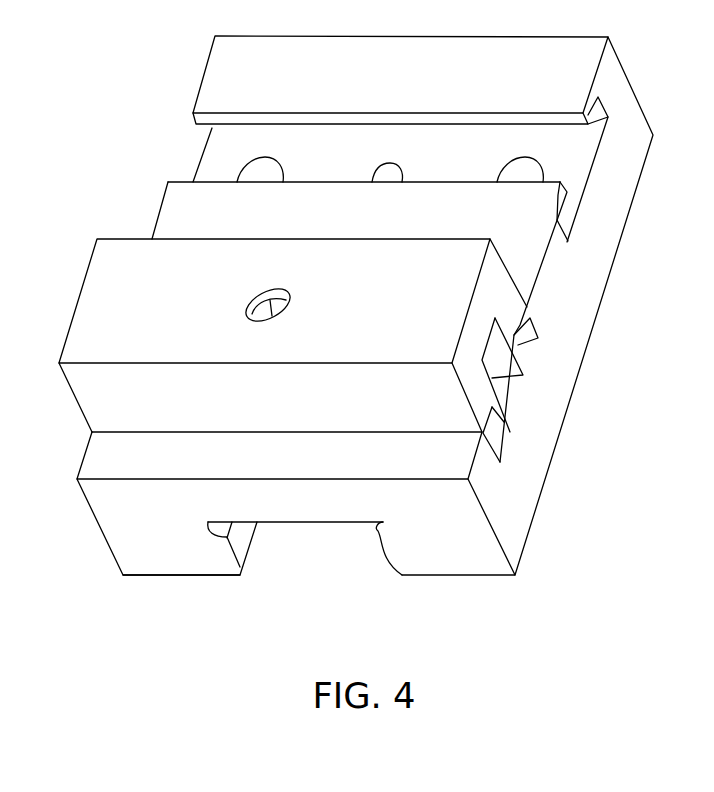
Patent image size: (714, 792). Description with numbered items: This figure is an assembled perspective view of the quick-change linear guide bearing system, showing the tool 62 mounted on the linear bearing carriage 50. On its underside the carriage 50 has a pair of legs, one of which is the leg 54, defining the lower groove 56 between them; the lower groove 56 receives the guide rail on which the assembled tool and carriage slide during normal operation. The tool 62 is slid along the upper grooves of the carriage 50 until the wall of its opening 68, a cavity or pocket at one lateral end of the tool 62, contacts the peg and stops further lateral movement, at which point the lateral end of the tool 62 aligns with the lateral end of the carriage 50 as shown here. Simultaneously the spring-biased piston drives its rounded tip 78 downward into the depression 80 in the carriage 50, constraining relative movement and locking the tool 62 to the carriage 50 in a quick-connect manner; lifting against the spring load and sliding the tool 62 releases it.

The linear bearing carriage 50 is at (590, 297).
The leg 54 is at (168, 562).
The lower groove 56 is at (307, 550).
The tool 62 is at (95, 297).
The opening 68 is at (500, 388).
The tip 78 is at (252, 312).
The depression 80 is at (392, 165).